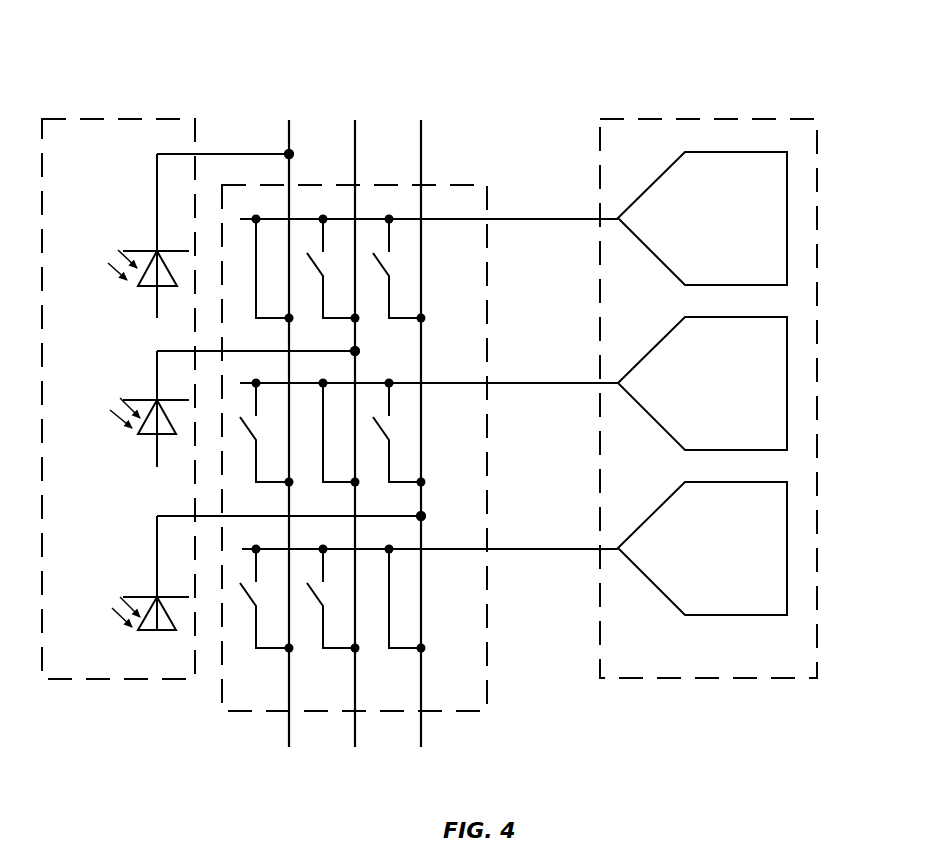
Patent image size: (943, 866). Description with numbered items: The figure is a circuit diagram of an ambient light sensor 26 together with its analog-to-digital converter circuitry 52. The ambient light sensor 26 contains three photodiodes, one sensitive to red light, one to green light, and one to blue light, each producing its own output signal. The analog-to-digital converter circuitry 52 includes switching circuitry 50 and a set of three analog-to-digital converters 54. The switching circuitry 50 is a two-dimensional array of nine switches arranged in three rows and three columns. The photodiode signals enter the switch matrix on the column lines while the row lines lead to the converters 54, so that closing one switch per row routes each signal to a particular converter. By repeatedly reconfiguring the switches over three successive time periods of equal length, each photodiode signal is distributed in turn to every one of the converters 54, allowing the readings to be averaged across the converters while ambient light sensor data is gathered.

The ambient light sensor 26 is at (100, 118).
The switching circuitry 50 is at (220, 688).
The analog-to-digital converter circuitry 52 is at (783, 90).
The analog-to-digital converters 54 is at (762, 682).